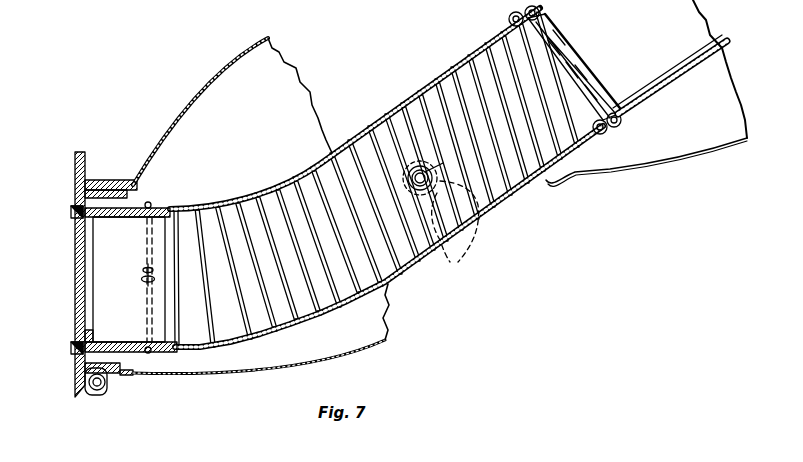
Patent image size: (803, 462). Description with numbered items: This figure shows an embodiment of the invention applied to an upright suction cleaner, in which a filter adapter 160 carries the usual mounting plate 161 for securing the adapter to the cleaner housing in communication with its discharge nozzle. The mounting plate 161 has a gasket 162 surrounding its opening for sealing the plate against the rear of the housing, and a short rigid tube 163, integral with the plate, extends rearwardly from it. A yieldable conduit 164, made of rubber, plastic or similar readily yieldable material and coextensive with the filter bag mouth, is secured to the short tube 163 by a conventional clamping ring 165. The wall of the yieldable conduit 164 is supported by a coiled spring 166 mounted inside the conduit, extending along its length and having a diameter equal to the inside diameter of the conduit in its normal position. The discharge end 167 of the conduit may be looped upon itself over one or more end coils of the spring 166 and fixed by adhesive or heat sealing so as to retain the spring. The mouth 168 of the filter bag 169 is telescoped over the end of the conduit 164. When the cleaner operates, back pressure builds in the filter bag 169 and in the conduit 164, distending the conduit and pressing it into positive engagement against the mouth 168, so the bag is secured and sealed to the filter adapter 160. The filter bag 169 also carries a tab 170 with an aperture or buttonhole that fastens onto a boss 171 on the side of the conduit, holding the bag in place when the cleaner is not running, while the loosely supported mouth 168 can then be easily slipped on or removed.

The filter adapter 160 is at (165, 205).
The mounting plate 161 is at (84, 162).
The gasket 162 is at (71, 212).
The short rigid tube 163 is at (122, 208).
The yieldable conduit 164 is at (293, 177).
The clamping ring 165 is at (146, 256).
The coiled spring 166 is at (390, 112).
The discharge end 167 is at (562, 50).
The mouth 168 is at (645, 101).
The filter bag 169 is at (636, 171).
The tab 170 is at (470, 260).
The boss 171 is at (455, 256).